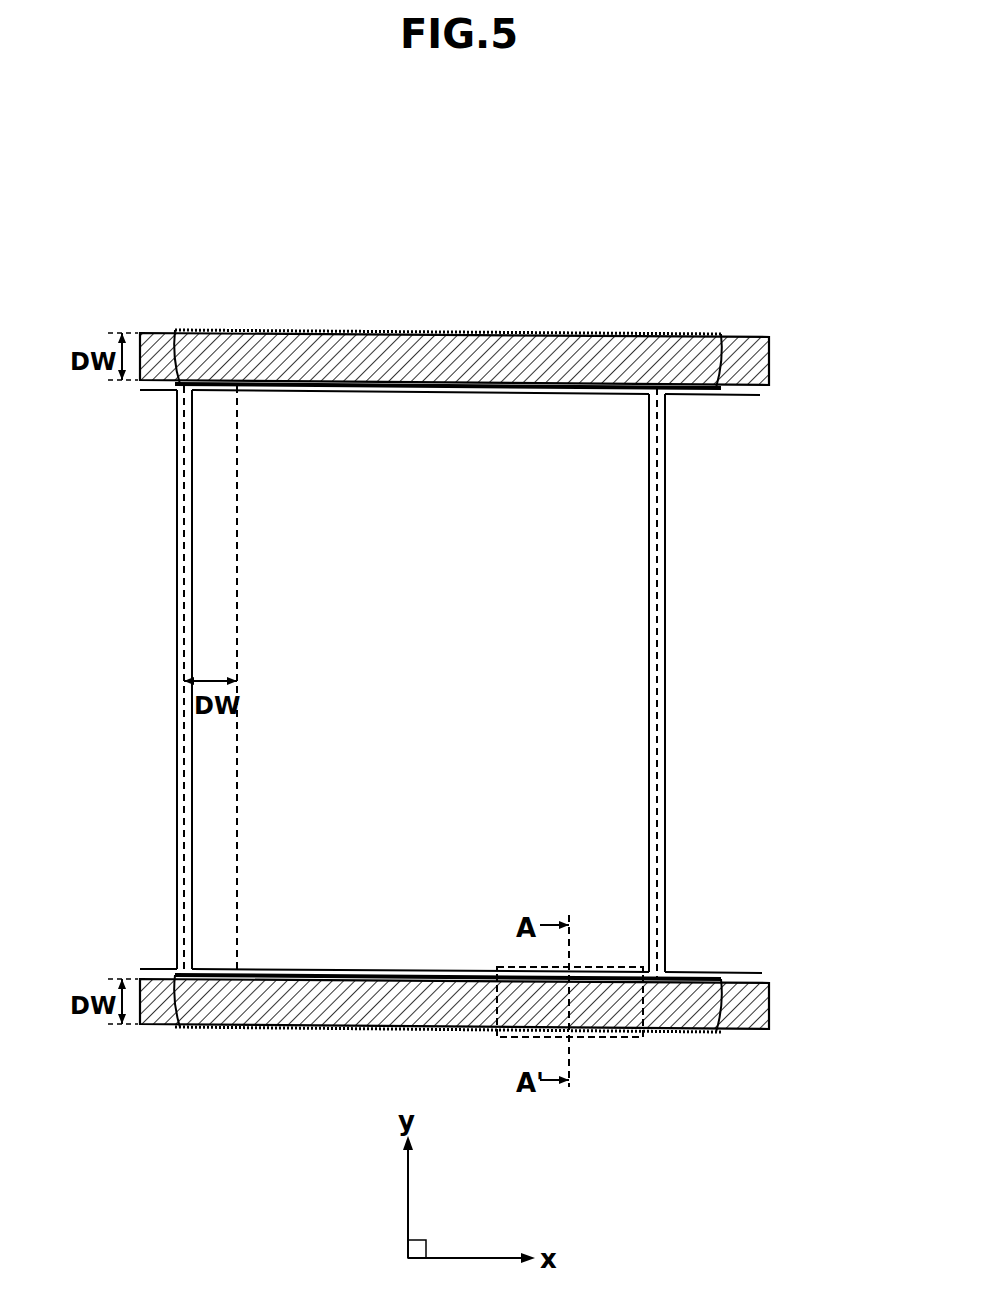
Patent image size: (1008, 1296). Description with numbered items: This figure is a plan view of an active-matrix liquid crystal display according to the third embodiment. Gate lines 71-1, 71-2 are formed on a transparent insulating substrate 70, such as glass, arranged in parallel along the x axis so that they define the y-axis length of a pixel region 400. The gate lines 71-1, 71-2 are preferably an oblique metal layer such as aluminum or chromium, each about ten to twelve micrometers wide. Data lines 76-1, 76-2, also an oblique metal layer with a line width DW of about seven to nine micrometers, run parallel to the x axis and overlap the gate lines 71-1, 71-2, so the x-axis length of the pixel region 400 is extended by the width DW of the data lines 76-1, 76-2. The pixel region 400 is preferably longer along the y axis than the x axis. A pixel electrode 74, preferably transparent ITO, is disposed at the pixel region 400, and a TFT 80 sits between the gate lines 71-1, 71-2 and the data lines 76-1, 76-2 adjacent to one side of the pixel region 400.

The transparent insulating substrate 70 is at (456, 248).
The gate line 71-1 is at (700, 1032).
The gate line 71-2 is at (648, 332).
The data line 76-1 is at (769, 1006).
The data line 76-2 is at (769, 361).
The pixel electrode 74 is at (640, 612).
The pixel region 400 is at (657, 488).
The TFT 80 is at (607, 1038).